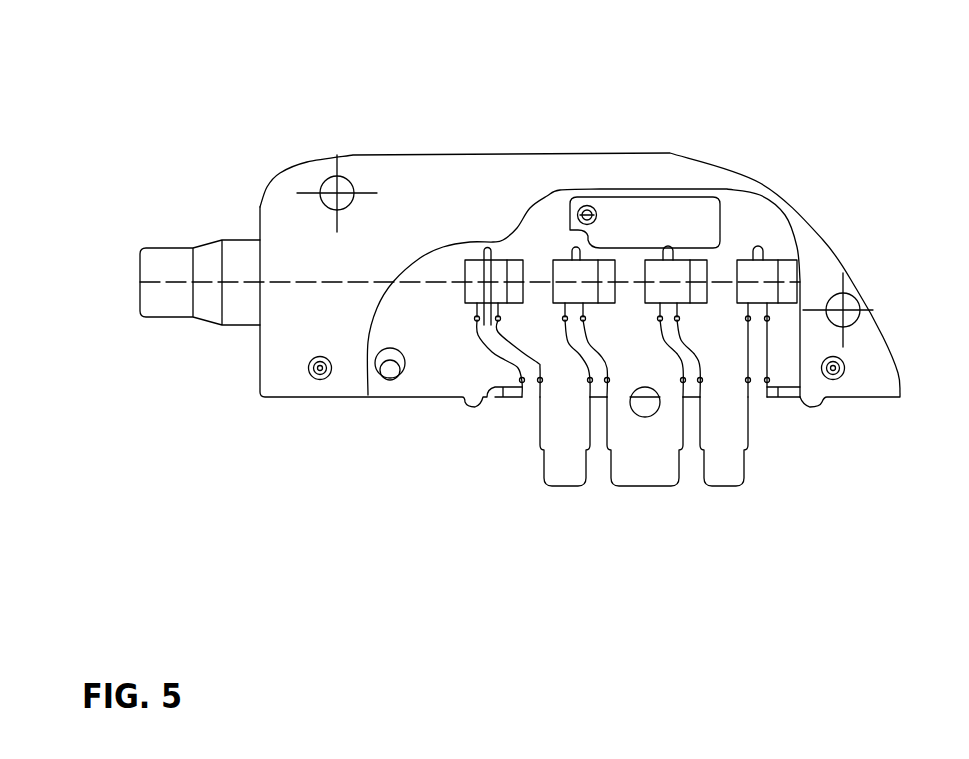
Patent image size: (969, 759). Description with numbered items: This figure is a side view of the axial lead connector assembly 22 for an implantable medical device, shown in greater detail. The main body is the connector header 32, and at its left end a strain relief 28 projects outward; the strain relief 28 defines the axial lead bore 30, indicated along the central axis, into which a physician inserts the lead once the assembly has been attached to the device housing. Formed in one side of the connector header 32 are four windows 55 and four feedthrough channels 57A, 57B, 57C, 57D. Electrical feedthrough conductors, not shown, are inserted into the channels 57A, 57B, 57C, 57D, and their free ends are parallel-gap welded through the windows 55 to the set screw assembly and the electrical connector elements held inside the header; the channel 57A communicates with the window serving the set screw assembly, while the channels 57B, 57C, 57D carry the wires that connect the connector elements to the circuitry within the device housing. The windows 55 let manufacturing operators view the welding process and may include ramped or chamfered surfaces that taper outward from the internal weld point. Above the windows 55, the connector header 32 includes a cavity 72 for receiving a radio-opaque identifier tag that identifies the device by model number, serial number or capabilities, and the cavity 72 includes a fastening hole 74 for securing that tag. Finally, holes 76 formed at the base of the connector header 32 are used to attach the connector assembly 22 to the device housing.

The connector assembly 22 is at (228, 102).
The strain relief 28 is at (155, 247).
The axial lead bore 30 is at (124, 282).
The connector header 32 is at (420, 153).
The windows 55 is at (775, 250).
The channel 57A is at (518, 357).
The channel 57B is at (590, 352).
The channel 57C is at (687, 363).
The channel 57D is at (757, 357).
The cavity 72 is at (675, 212).
The fastening hole 74 is at (583, 205).
The holes 76 is at (322, 379).